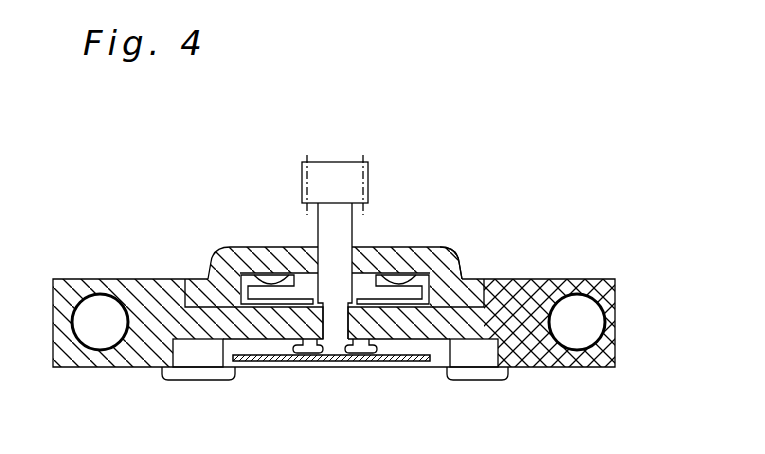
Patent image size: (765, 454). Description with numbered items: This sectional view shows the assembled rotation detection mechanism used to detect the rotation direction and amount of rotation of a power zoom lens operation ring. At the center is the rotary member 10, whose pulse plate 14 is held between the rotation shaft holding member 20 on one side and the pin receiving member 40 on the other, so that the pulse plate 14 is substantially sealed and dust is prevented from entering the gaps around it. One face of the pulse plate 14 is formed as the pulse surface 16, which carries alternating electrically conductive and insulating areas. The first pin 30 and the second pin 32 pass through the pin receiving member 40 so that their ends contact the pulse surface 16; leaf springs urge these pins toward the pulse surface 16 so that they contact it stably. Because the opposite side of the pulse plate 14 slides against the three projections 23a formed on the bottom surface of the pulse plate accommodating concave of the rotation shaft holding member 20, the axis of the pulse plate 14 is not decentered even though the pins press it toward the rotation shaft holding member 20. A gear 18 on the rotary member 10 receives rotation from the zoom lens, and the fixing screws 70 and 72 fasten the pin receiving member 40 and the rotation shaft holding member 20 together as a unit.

The actuator 10 is at (357, 228).
The cover flange 14 is at (463, 268).
The housing 16 is at (435, 330).
The knob 18 is at (372, 183).
The cover 20 is at (213, 252).
The contact springs 23a is at (270, 280).
The fixed contact 30 is at (383, 348).
The fixed contact 32 is at (288, 347).
The base 40 is at (120, 279).
The terminal 70 is at (202, 381).
The terminal 72 is at (482, 380).